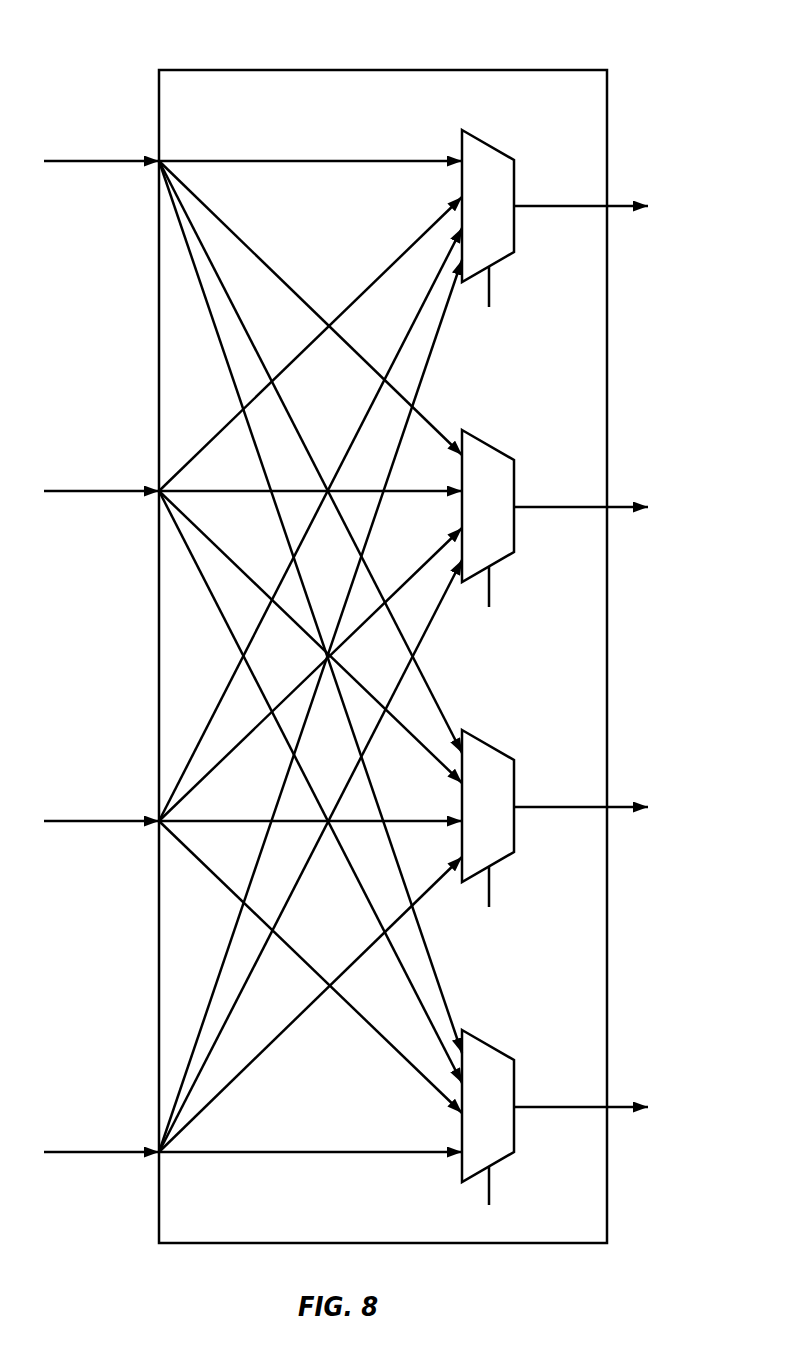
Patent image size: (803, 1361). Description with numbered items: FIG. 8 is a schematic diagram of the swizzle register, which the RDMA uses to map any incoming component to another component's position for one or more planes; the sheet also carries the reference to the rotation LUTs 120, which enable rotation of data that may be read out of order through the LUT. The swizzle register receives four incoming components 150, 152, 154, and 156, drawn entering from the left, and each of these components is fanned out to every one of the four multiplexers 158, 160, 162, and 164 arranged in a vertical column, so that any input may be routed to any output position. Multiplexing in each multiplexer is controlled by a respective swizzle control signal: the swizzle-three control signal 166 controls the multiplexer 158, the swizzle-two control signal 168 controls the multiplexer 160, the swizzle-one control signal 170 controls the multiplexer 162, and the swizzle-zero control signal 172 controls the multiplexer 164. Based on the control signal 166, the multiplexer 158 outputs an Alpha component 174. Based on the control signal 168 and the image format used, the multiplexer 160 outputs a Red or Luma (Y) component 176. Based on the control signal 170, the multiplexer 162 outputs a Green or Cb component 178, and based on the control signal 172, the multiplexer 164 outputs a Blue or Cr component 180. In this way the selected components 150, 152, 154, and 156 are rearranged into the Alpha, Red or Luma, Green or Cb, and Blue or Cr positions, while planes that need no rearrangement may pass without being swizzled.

The rotation LUTs 120 is at (622, 49).
The component 150 is at (73, 159).
The component 152 is at (73, 489).
The component 154 is at (73, 819).
The component 156 is at (73, 1150).
The multiplexer 158 is at (489, 142).
The multiplexer 160 is at (489, 442).
The multiplexer 162 is at (489, 742).
The multiplexer 164 is at (489, 1042).
The control signal Swizzle[3] 166 is at (518, 304).
The control signal Swizzle[2] 168 is at (518, 604).
The control signal Swizzle[1] 170 is at (518, 904).
The control signal Swizzle[0] 172 is at (518, 1204).
The Alpha component 174 is at (642, 169).
The Red or Luma (Y) component 176 is at (652, 471).
The Green or Cb component 178 is at (667, 771).
The Blue or Cr component 180 is at (668, 1070).